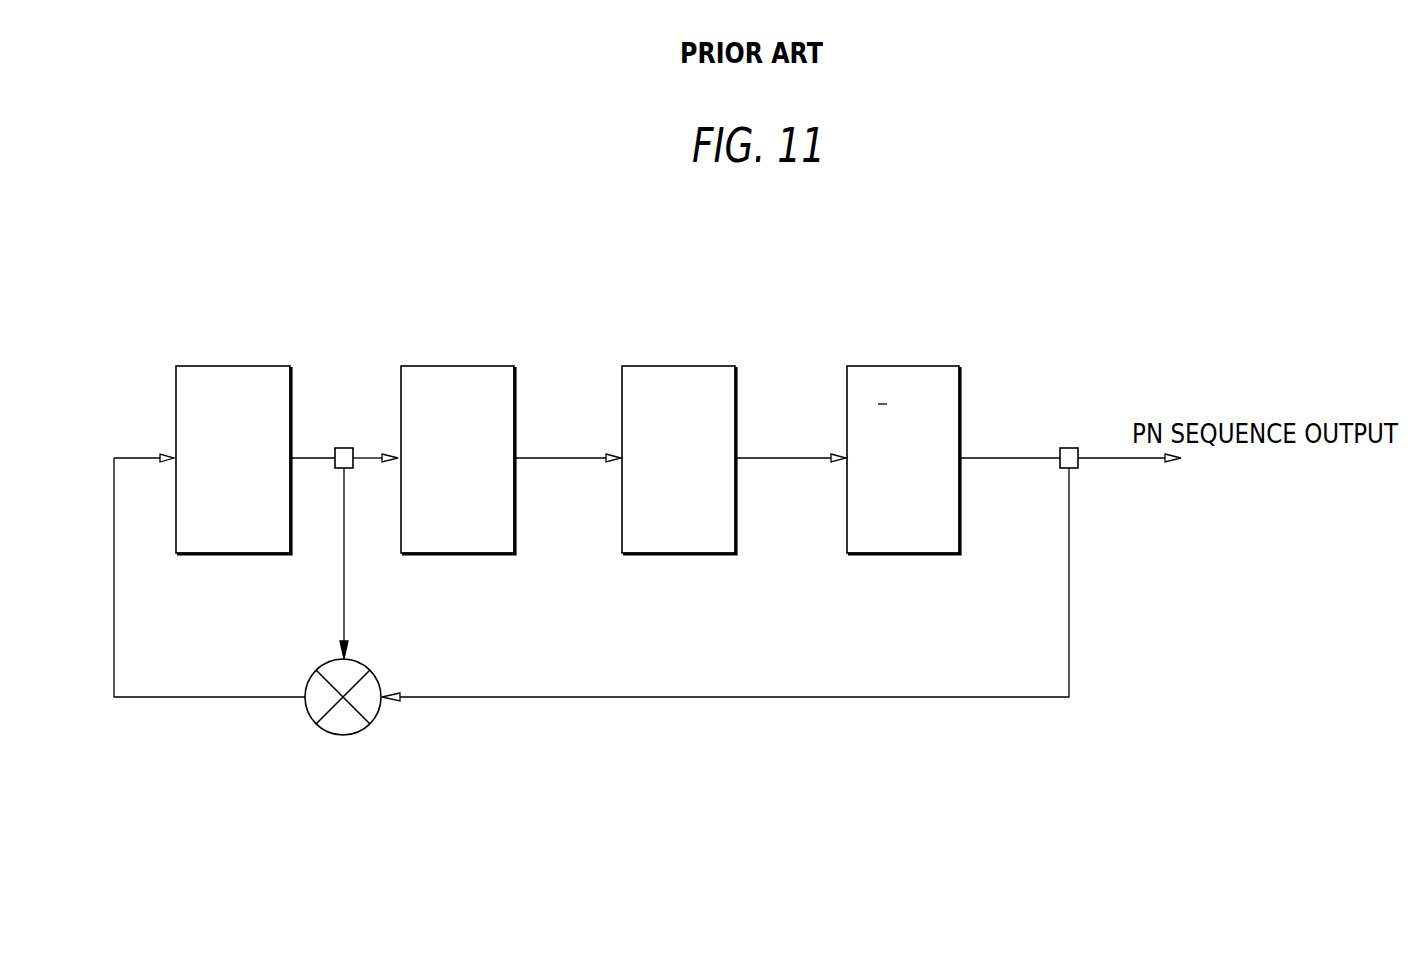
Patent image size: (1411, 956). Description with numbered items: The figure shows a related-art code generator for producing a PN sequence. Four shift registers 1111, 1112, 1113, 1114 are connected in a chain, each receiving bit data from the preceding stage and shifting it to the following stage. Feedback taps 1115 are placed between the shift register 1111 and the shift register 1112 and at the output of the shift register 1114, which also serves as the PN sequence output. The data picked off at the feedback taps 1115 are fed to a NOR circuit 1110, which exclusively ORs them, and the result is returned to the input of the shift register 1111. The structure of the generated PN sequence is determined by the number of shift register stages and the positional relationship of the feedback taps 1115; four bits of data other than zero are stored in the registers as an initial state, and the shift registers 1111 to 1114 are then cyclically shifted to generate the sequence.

The NOR circuit 1110 is at (387, 645).
The shift register 1111 is at (233, 366).
The shift register 1112 is at (478, 348).
The shift register 1113 is at (702, 348).
The shift register 1114 is at (923, 348).
The feedback tap 1115 is at (345, 448).